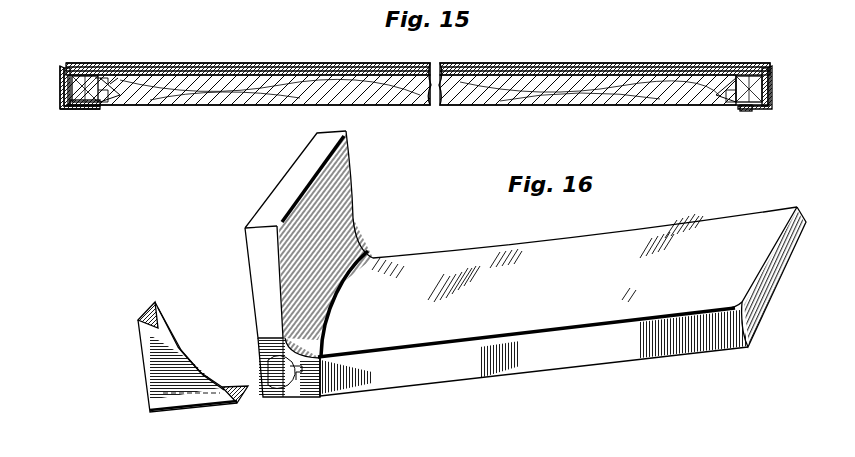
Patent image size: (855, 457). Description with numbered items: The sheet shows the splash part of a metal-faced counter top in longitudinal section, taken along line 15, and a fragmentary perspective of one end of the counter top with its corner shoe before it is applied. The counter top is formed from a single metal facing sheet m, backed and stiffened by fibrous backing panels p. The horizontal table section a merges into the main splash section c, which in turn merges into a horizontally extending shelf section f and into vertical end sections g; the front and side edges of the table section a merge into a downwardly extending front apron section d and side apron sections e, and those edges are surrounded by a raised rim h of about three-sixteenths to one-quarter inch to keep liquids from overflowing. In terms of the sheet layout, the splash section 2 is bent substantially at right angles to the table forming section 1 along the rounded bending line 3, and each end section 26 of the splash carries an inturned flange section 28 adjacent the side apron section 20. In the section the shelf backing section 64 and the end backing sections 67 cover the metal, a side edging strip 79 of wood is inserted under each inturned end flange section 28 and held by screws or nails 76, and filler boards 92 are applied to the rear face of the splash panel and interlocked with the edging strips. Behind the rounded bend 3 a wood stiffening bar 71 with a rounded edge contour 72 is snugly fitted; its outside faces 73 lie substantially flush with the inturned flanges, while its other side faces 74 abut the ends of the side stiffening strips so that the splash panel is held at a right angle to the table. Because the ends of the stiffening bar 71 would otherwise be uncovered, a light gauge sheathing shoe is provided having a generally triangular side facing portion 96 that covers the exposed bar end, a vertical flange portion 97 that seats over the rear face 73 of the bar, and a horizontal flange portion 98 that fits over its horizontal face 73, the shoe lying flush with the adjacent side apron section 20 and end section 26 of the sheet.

In FIG. 16, the table forming section 1 is at (166, 360).
In FIG. 15, the splash section 2 is at (418, 82).
In FIG. 16, the bending line 3 is at (319, 346).
In FIG. 16, the section line 15— 15 is at (754, 322).
In FIG. 16, the side apron section 20 is at (474, 368).
In FIG. 16, the end section 26 is at (294, 244).
In FIG. 15, the flange section 28 is at (96, 105).
In FIG. 15, the shelf backing section 64 is at (205, 64).
In FIG. 15, the end backing section 67 is at (63, 82).
In FIG. 16, the wood stiffening bar 71 is at (283, 398).
In FIG. 16, the rounded edge contour 72 is at (301, 384).
In FIG. 16, the outside faces 73 is at (294, 368).
In FIG. 16, the side faces 74 is at (280, 336).
In FIG. 15, the screws or nails 76 is at (745, 111).
In FIG. 15, the side edging strip 79 is at (124, 100).
In FIG. 15, the filler boards 92 is at (238, 95).
In FIG. 15, the side facing portion 96 is at (62, 97).
In FIG. 16, the side facing portion 96 is at (150, 378).
In FIG. 15, the vertical flange portion 97 is at (80, 109).
In FIG. 16, the vertical flange portion 97 is at (147, 307).
In FIG. 16, the horizontal flange portion 98 is at (240, 406).
In FIG. 16, the table section a is at (616, 238).
In FIG. 16, the main splash section c is at (352, 186).
In FIG. 16, the front apron section d is at (774, 280).
In FIG. 16, the side apron section e is at (533, 349).
In FIG. 16, the shelf section f is at (313, 142).
In FIG. 16, the vertical end section g is at (258, 291).
In FIG. 16, the raised rim h is at (574, 332).
In FIG. 15, the metal facing sheet m is at (262, 55).
In FIG. 15, the fibrous backing panels p is at (590, 92).